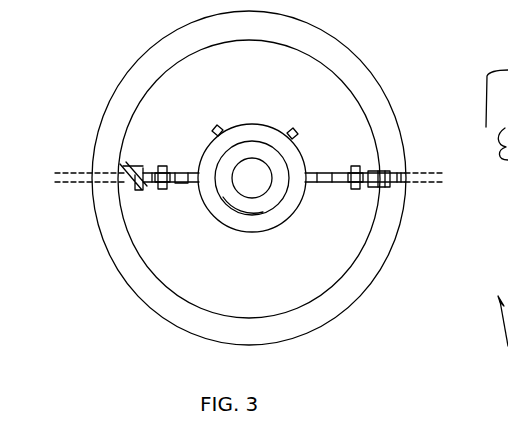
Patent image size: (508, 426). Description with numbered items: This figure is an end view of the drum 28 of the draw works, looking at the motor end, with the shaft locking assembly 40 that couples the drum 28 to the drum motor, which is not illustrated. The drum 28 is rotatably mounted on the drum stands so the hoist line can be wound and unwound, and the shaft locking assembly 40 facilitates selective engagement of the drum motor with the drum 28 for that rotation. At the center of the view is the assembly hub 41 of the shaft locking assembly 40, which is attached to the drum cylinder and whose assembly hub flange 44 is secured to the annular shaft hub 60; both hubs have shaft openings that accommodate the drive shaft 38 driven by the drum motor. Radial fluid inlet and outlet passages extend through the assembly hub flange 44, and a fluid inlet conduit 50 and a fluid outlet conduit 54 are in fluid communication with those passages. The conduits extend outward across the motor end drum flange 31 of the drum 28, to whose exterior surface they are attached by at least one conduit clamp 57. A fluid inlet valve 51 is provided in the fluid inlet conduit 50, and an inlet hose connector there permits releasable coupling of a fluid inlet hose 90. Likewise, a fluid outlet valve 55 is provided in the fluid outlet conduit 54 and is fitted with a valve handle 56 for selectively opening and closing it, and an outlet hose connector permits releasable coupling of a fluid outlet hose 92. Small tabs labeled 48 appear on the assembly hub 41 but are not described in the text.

The drum 28 is at (390, 98).
The motor end drum flange 31 is at (388, 237).
The shaft locking assembly 40 is at (316, 87).
The assembly hub 41 is at (252, 122).
The assembly hub flange 44 is at (257, 233).
The drive shaft 38 is at (258, 183).
The shaft hub 60 is at (228, 197).
The hub tabs 48 is at (219, 127).
The fluid outlet hose 92 is at (73, 172).
The fluid inlet hose 90 is at (422, 173).
The fluid inlet conduit 50 is at (356, 190).
The conduit clamp 57 is at (163, 163).
The fluid inlet valve 51 is at (403, 171).
The valve handle 56 is at (128, 194).
The fluid outlet valve 55 is at (137, 166).
The fluid outlet conduit 54 is at (182, 184).